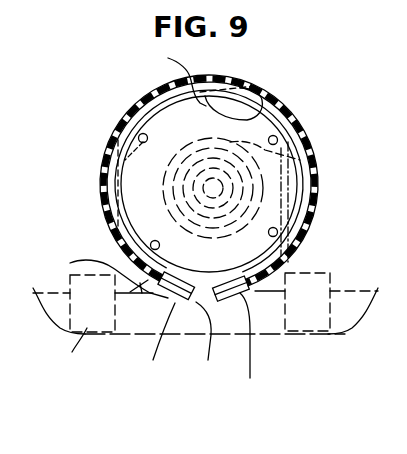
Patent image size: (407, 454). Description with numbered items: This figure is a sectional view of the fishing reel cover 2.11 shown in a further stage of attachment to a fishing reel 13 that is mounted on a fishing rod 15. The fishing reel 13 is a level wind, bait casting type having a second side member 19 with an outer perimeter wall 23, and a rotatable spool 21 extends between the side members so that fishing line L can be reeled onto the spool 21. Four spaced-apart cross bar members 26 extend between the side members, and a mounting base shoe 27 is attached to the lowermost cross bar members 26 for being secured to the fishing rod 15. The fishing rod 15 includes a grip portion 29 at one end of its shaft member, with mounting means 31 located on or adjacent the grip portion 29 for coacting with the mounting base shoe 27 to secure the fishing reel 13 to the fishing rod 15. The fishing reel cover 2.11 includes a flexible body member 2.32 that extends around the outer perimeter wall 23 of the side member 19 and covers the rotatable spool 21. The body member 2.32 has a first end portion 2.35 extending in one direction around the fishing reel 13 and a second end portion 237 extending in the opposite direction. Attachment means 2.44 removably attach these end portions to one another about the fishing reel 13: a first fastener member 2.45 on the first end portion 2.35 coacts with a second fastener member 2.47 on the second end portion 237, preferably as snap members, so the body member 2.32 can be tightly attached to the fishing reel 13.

The fishing reel cover 2.11 is at (205, 176).
The second side member 19 is at (175, 125).
The fishing reel 13 is at (100, 208).
The fishing line L is at (178, 78).
The outer perimeter wall 23 is at (228, 93).
The rotatable spool 21 is at (213, 188).
The flexible body member 2.32 is at (374, 168).
The cross bar member 26 is at (138, 138).
The first fastener member 2.45 is at (275, 262).
The attachment means 2.44 is at (238, 397).
The grip portion 29 is at (130, 333).
The mounting base shoe 27 is at (268, 296).
The mounting means 31 is at (82, 337).
The second fastener member 2.47 is at (152, 340).
The fishing rod 15 is at (196, 333).
The second end portion 237 is at (213, 347).
The first end portion 2.35 is at (266, 344).